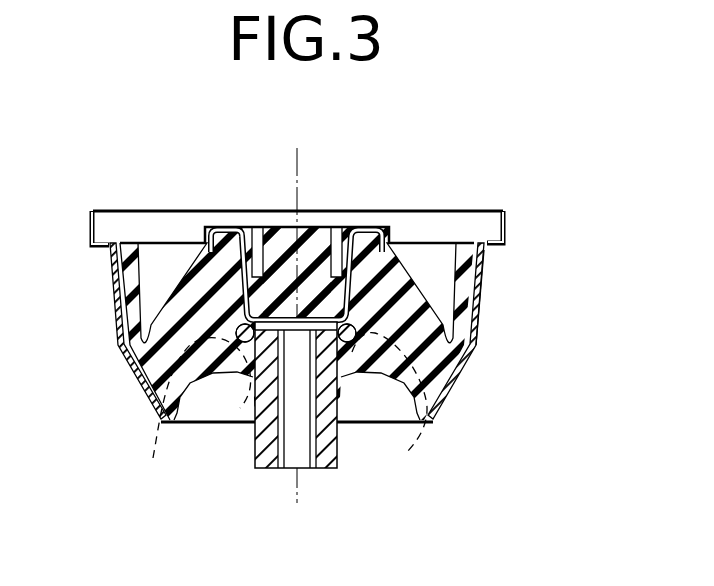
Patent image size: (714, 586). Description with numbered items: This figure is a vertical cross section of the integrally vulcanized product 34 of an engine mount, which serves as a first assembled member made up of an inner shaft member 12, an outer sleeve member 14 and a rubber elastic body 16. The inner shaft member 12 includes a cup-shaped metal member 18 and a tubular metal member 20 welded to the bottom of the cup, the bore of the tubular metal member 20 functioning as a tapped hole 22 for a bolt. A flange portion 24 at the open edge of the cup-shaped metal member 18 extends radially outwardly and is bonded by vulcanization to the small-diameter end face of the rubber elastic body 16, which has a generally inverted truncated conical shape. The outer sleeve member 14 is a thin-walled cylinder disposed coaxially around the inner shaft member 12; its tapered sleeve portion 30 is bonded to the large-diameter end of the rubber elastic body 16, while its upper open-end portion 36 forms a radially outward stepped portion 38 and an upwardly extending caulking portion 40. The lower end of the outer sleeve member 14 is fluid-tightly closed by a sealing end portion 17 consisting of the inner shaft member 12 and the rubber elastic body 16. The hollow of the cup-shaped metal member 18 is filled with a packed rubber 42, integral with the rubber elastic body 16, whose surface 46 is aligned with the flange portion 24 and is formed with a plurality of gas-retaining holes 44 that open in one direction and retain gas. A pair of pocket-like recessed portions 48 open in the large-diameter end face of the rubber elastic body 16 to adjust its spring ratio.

The inner shaft member 12 is at (243, 438).
The outer sleeve member 14 is at (502, 306).
The rubber elastic body 16 is at (195, 335).
The sealing end portion 17 is at (382, 209).
The cup-shaped metal member 18 is at (440, 211).
The tubular metal member 20 is at (323, 405).
The tapped hole 22 is at (282, 423).
The flange portion 24 is at (217, 230).
The tapered sleeve portion 30 is at (135, 378).
The integrally vulcanized product 34 is at (409, 165).
The upper open-end portion 36 is at (137, 222).
The stepped portion 38 is at (497, 262).
The caulking portion 40 is at (92, 233).
The packed rubber 42 is at (311, 228).
The gas-retaining holes 44 is at (255, 228).
The surface 46 is at (286, 228).
The recessed portions 48 is at (282, 409).